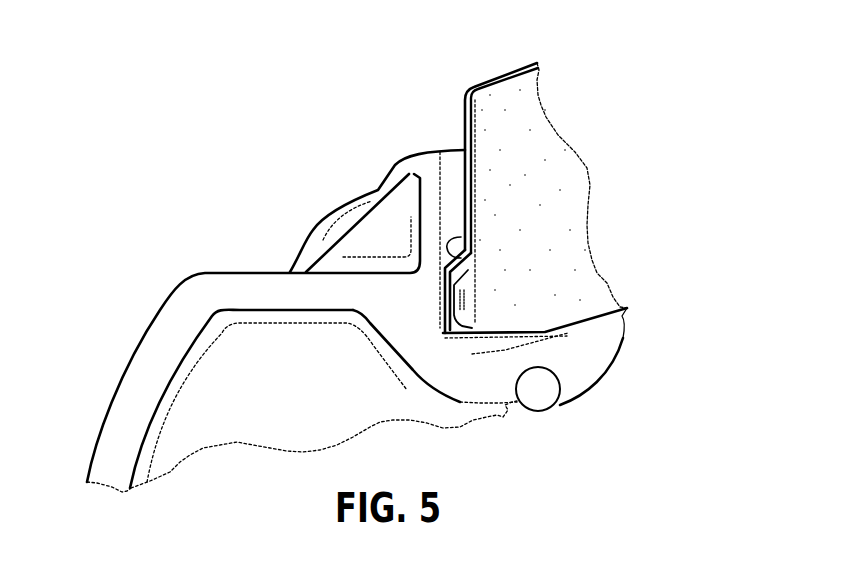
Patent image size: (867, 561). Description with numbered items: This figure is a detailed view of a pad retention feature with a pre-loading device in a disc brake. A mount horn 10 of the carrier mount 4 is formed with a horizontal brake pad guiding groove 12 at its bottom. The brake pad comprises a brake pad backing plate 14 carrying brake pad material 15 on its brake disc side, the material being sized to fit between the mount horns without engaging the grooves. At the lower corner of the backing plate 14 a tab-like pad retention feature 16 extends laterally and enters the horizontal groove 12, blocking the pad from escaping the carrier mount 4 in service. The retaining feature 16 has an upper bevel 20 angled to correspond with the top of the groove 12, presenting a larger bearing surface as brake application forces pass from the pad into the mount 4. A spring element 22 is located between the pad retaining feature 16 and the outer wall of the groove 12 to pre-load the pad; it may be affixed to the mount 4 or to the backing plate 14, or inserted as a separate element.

The carrier mount 4 is at (150, 321).
The mount horn 10 is at (410, 171).
The horizontal brake pad guiding groove 12 is at (448, 325).
The brake pad backing plate 14 is at (463, 120).
The brake pad material 15 is at (632, 195).
The pad retention feature 16 is at (352, 273).
The bevel 20 is at (462, 238).
The spring element 22 is at (470, 291).